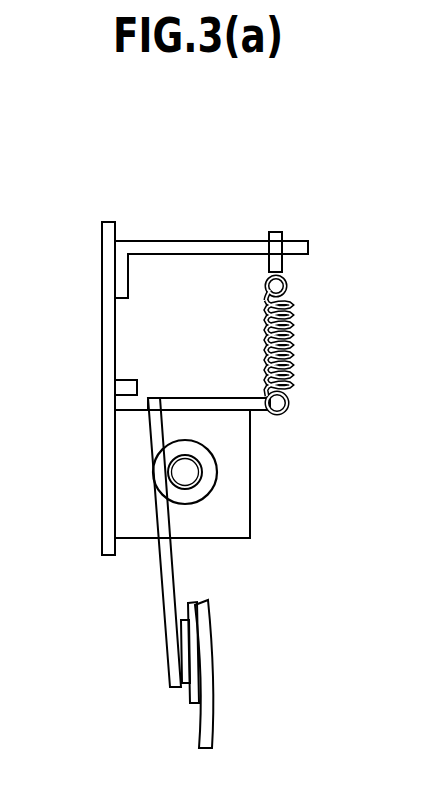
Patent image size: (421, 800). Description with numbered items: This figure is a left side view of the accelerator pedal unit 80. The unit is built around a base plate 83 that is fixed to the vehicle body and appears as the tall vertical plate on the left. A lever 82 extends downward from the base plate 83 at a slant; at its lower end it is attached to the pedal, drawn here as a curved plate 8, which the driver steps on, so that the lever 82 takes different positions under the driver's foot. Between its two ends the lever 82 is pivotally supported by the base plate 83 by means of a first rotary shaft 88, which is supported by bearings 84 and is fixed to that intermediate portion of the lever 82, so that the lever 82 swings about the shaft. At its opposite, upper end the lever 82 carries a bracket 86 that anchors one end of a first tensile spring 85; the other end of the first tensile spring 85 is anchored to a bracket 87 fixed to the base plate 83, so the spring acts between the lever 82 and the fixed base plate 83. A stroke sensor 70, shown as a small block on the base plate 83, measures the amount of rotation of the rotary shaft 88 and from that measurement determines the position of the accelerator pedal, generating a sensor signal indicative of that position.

The base plate 83 is at (102, 232).
The stroke sensor 70 is at (116, 388).
The bracket 87 is at (246, 241).
The first tensile spring 85 is at (299, 357).
The bracket 86 is at (198, 398).
The first rotary shaft 88 is at (195, 471).
The bearings 84 is at (205, 497).
The lever 82 is at (162, 580).
The accelerator pedal unit 80 is at (185, 717).
The plate 8 is at (213, 672).